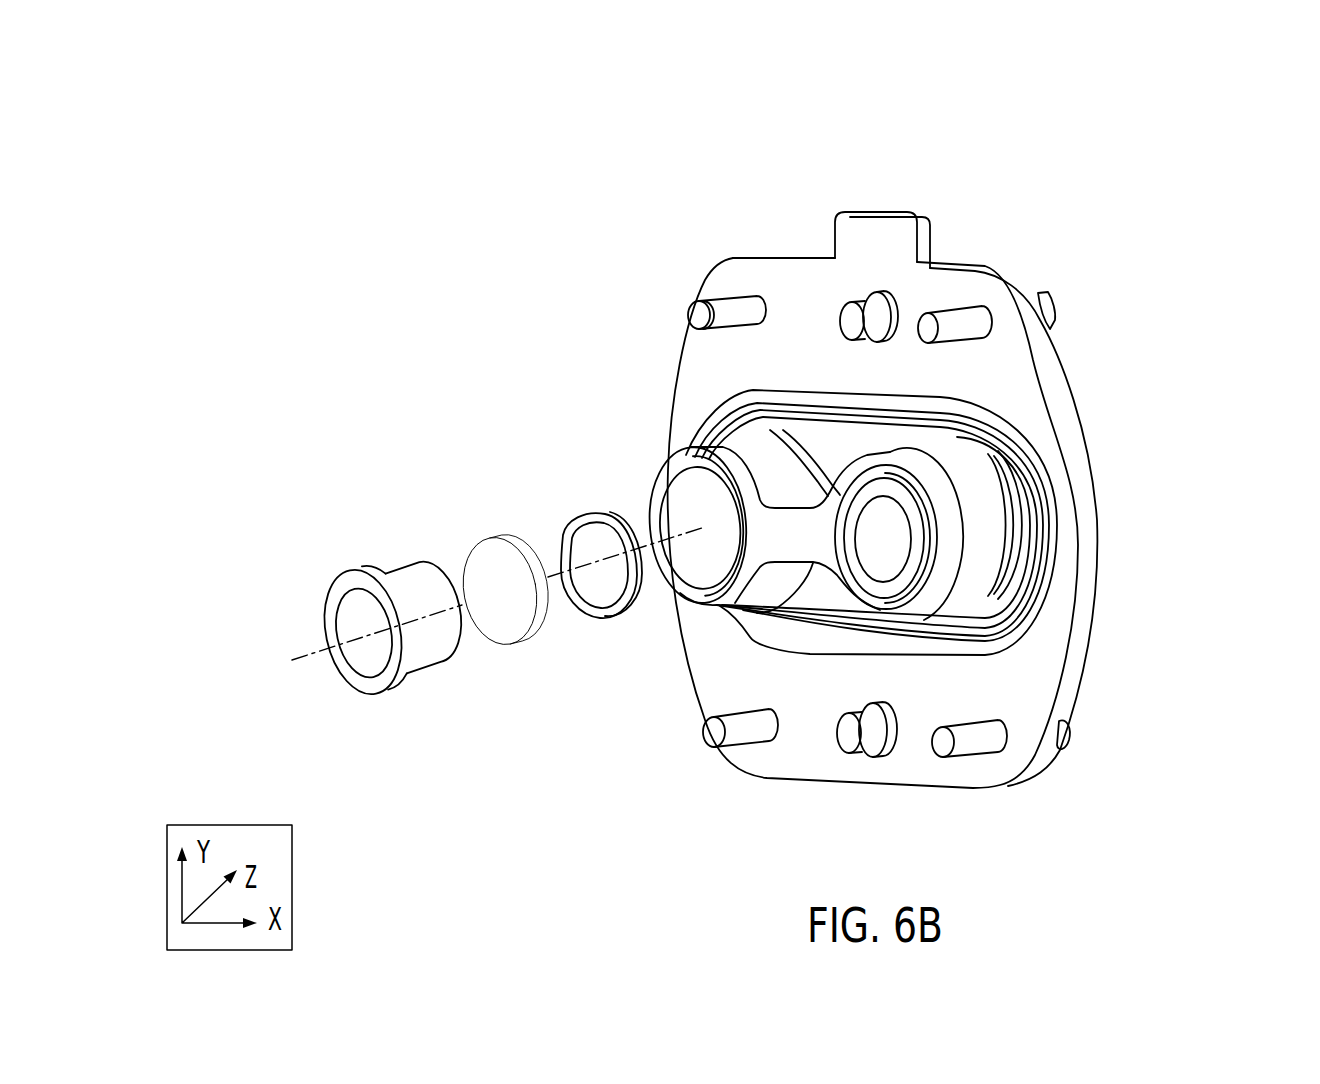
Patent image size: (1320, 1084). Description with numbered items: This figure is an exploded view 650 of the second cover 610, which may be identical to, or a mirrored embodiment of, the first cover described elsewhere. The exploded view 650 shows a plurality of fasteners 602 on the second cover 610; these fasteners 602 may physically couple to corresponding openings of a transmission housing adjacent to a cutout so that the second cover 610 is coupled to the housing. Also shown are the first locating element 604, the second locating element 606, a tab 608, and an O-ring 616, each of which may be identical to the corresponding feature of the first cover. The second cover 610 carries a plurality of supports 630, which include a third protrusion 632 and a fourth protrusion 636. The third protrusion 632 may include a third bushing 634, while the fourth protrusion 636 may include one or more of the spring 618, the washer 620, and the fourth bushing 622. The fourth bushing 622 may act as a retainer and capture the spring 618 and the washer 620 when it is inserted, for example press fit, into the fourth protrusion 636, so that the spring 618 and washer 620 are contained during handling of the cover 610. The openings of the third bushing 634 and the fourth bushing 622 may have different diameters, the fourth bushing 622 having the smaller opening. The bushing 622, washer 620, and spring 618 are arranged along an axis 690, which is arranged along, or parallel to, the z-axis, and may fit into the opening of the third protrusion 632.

The fasteners 602 is at (678, 297).
The first locating element 604 is at (853, 312).
The second locating element 606 is at (853, 745).
The tab 608 is at (850, 210).
The second cover 610 is at (958, 790).
The O-ring 616 is at (1053, 562).
The spring 618 is at (565, 535).
The washer 620 is at (468, 553).
The fourth bushing 622 is at (423, 670).
The plurality of supports 630 is at (650, 449).
The third protrusion 632 is at (950, 460).
The third bushing 634 is at (932, 518).
The fourth protrusion 636 is at (705, 608).
The exploded view 650 is at (1078, 122).
The axis 690 is at (295, 667).